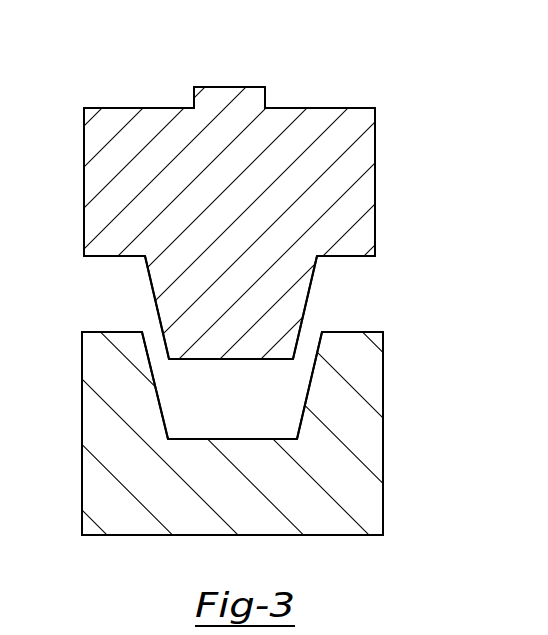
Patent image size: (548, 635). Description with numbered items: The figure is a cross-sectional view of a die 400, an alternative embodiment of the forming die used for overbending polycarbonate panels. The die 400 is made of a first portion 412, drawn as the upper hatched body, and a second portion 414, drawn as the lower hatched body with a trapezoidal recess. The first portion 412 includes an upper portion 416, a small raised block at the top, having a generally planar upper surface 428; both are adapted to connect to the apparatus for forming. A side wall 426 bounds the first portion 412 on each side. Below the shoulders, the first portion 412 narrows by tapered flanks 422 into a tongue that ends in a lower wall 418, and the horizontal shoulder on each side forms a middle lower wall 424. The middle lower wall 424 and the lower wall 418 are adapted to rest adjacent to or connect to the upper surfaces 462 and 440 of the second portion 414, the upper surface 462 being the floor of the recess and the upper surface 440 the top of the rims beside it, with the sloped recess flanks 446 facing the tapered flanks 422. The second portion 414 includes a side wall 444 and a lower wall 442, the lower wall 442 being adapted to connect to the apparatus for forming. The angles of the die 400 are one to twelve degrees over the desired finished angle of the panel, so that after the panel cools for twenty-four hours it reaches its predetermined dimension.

The die 400 is at (47, 218).
The first portion 412 is at (93, 150).
The second portion 414 is at (363, 425).
The upper portion 416 is at (227, 86).
The lower wall 418 is at (232, 361).
The tapered side wall 422 is at (308, 298).
The middle lower wall 424 is at (347, 257).
The side wall 426 is at (376, 189).
The upper surface 428 is at (317, 107).
The upper surface 440 is at (353, 331).
The lower wall 442 is at (283, 537).
The side wall 444 is at (384, 378).
The groove side wall 446 is at (306, 396).
The upper surface 462 is at (207, 439).